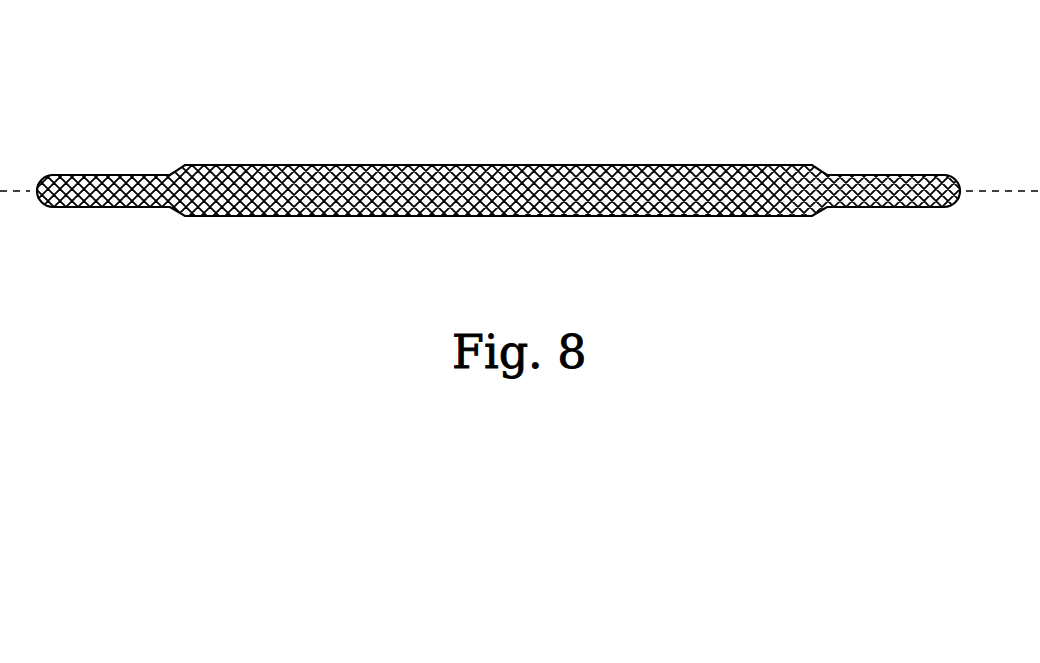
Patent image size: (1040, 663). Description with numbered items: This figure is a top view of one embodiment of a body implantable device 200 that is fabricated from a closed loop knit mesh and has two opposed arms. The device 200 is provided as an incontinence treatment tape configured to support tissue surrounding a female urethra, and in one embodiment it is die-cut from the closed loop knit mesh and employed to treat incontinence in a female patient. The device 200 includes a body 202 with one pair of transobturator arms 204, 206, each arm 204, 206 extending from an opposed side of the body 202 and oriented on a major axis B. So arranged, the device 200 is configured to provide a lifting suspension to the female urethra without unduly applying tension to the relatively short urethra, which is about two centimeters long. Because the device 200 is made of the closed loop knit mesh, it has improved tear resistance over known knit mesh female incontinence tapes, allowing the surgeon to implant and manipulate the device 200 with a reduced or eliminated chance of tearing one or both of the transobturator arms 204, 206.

The body implantable device 200 is at (553, 99).
The body 202 is at (415, 204).
The transobturator arm 204 is at (117, 190).
The transobturator arm 206 is at (890, 204).
The major axis B is at (1022, 190).